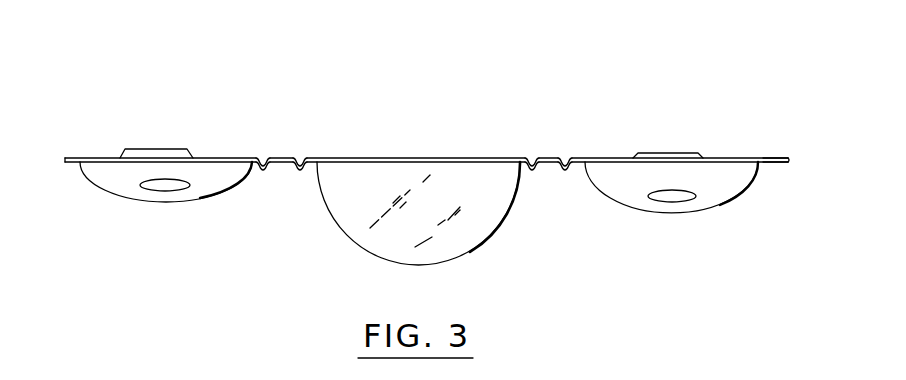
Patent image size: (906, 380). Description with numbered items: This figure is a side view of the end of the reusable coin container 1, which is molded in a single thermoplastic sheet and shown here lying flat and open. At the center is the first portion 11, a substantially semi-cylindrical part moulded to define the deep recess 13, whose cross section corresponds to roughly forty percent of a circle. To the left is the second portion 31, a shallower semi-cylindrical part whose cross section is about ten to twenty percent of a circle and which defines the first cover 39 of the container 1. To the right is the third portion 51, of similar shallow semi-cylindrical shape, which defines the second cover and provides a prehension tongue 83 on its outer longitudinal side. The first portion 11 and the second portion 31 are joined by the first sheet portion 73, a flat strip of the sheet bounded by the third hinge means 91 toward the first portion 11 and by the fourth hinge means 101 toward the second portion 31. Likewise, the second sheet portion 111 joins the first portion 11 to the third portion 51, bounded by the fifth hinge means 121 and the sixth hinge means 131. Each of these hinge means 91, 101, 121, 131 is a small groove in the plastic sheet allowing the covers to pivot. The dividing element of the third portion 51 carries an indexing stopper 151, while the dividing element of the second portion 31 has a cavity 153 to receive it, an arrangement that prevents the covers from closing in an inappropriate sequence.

The container 1 is at (738, 96).
The first portion 11 is at (462, 237).
The recess 13 is at (430, 152).
The second portion 31 is at (175, 195).
The first cover 39 is at (148, 186).
The third portion 51 is at (702, 197).
The first sheet portion 73 is at (282, 158).
The prehension tongue 83 is at (776, 158).
The third hinge means 91 is at (300, 155).
The fourth hinge means 101 is at (273, 169).
The second sheet portion 111 is at (547, 170).
The fifth hinge means 121 is at (531, 157).
The sixth hinge means 131 is at (566, 157).
The indexing stopper 151 is at (665, 152).
The cavity 153 is at (156, 117).